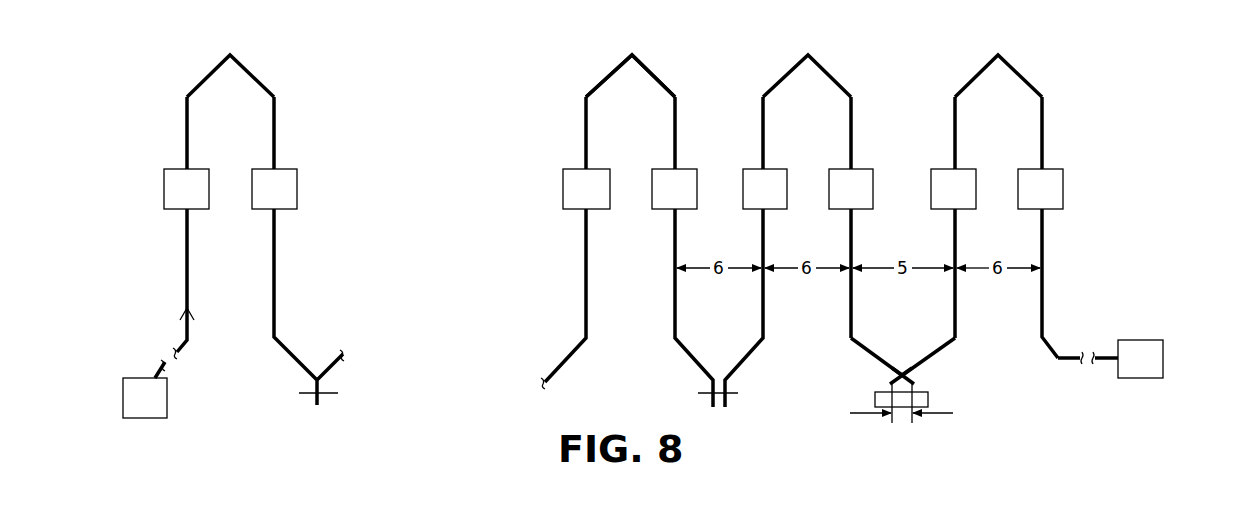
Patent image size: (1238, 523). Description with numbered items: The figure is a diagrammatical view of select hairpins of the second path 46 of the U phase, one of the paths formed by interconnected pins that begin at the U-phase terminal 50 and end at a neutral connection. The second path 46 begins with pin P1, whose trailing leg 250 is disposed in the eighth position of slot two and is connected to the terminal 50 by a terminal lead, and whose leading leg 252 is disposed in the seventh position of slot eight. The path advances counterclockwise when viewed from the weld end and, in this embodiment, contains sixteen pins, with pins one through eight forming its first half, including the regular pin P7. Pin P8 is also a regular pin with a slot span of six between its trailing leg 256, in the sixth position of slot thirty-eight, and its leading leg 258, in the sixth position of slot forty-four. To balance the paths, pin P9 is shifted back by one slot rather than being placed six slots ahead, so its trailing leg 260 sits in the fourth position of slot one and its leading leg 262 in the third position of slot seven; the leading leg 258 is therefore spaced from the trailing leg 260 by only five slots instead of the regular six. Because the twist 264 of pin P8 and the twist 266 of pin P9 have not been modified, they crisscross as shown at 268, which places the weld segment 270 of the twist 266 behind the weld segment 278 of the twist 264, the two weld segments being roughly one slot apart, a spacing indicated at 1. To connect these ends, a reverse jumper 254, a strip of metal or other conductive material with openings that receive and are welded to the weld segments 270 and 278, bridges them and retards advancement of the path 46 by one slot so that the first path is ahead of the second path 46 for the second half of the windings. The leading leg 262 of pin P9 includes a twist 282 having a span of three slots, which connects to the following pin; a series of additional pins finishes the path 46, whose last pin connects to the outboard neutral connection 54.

The Pin 1 P1 is at (222, 48).
The Pin 7 P7 is at (643, 50).
The Pin 8 P8 is at (820, 50).
The Pin 9 P9 is at (962, 60).
The second path 46 is at (452, 56).
The U-phase terminal 50 is at (133, 378).
The outboard neutral connection 54 is at (1140, 340).
The trailing leg 250 is at (186, 285).
The leading leg 252 is at (273, 285).
The reverse jumper 254 is at (928, 400).
The trailing leg 256 is at (762, 148).
The leading leg 258 is at (850, 325).
The trailing leg 260 is at (954, 148).
The leading leg 262 is at (1043, 148).
The twist 264 is at (875, 358).
The twist 266 is at (932, 355).
The crisscross 268 is at (896, 352).
The weld segment 270 is at (888, 423).
The fiber end 278 is at (913, 387).
The twist 282 is at (1053, 342).
The one-slot spacing 1 is at (943, 418).